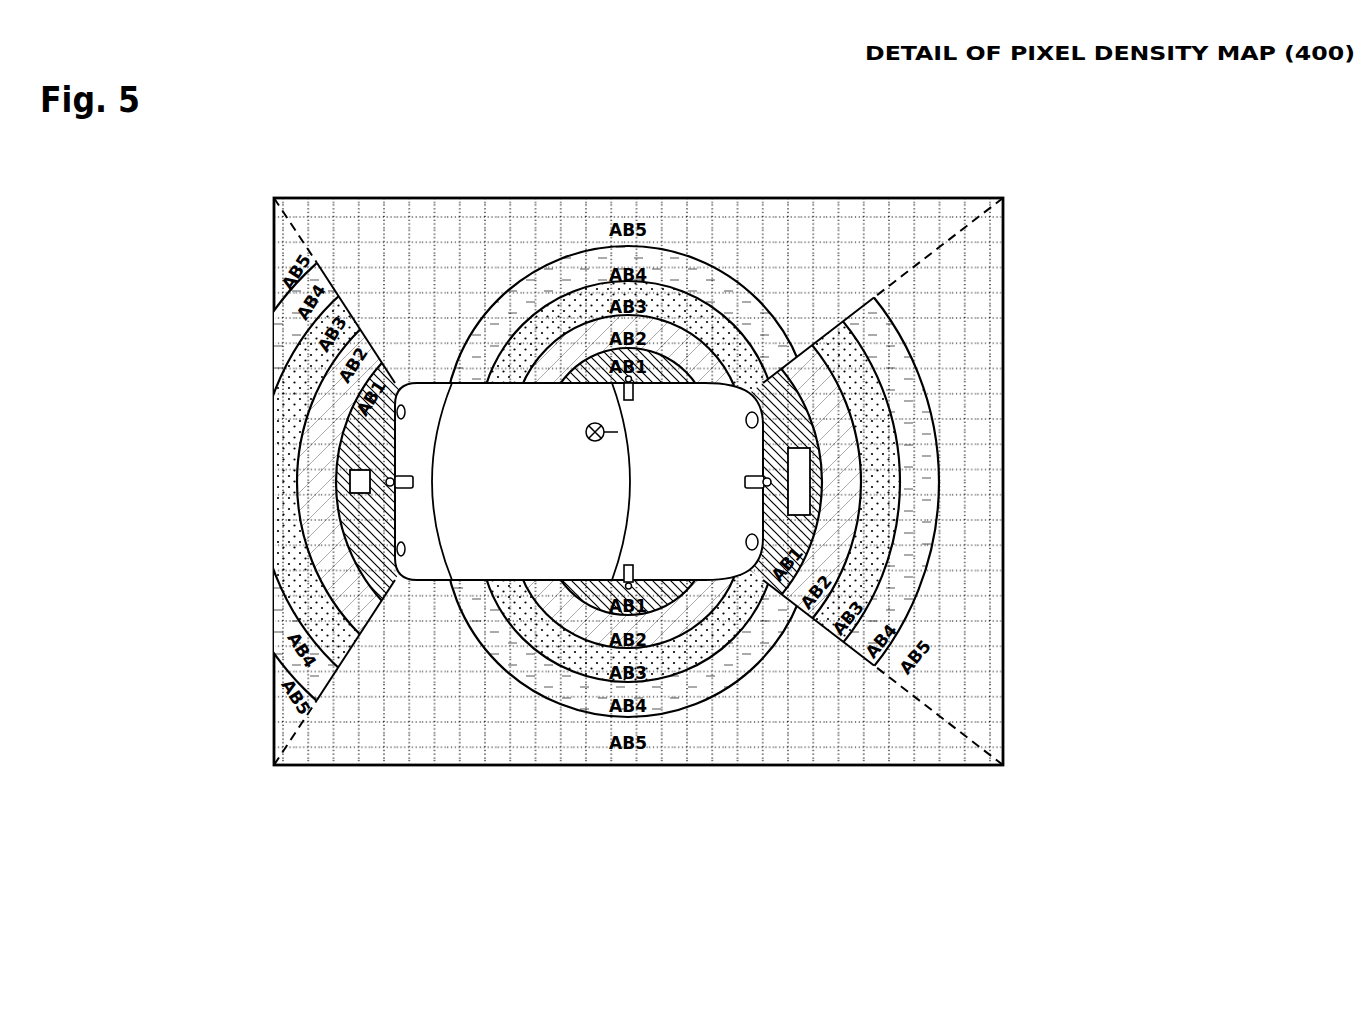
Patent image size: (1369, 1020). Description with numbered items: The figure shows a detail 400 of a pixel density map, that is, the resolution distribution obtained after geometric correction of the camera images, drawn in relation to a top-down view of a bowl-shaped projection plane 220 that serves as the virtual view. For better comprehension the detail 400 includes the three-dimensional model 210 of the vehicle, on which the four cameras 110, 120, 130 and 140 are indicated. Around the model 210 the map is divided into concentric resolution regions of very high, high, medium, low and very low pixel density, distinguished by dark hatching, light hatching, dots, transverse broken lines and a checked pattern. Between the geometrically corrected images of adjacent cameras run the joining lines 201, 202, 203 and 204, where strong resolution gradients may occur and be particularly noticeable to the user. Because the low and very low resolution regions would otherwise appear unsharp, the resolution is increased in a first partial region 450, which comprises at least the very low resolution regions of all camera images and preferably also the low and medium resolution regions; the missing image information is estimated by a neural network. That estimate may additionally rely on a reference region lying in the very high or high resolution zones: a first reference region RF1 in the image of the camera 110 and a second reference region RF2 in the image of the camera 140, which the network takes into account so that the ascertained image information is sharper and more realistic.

The camera 110 is at (745, 482).
The camera 120 is at (636, 394).
The camera 130 is at (636, 572).
The camera 140 is at (416, 486).
The joining line 201 is at (1003, 232).
The joining line 202 is at (1003, 746).
The joining line 203 is at (314, 750).
The joining line 204 is at (305, 216).
The three-dimensional model 210 is at (557, 479).
The bowl-shaped projection plane 220 is at (425, 228).
The detail of pixel density map 400 is at (1060, 146).
The first partial region 450 is at (654, 483).
The first reference region RF1 is at (812, 476).
The second reference region RF2 is at (350, 474).